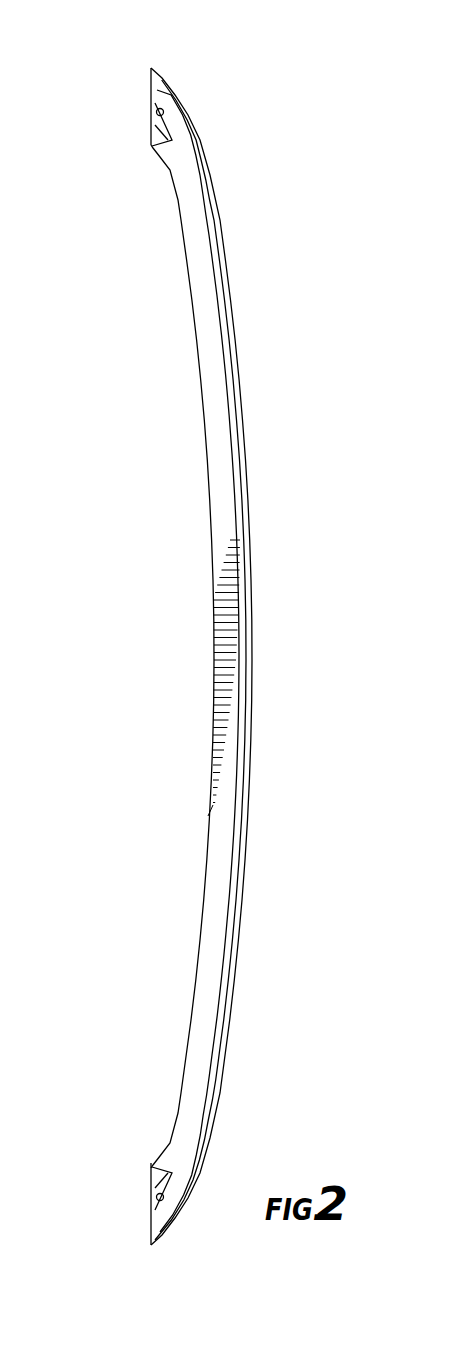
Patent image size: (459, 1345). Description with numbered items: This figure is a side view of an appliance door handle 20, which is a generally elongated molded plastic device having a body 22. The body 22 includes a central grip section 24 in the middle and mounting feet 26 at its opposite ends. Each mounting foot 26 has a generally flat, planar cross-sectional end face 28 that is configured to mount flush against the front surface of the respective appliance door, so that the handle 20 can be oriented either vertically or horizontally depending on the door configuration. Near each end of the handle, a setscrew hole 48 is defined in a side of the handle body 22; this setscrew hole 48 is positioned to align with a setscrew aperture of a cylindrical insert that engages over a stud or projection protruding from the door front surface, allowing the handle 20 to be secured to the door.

The handle 20 is at (257, 87).
The body 22 is at (245, 436).
The central grip section 24 is at (223, 558).
The mounting foot 26 is at (182, 150).
The end face 28 is at (151, 102).
The setscrew hole 48 is at (157, 113).